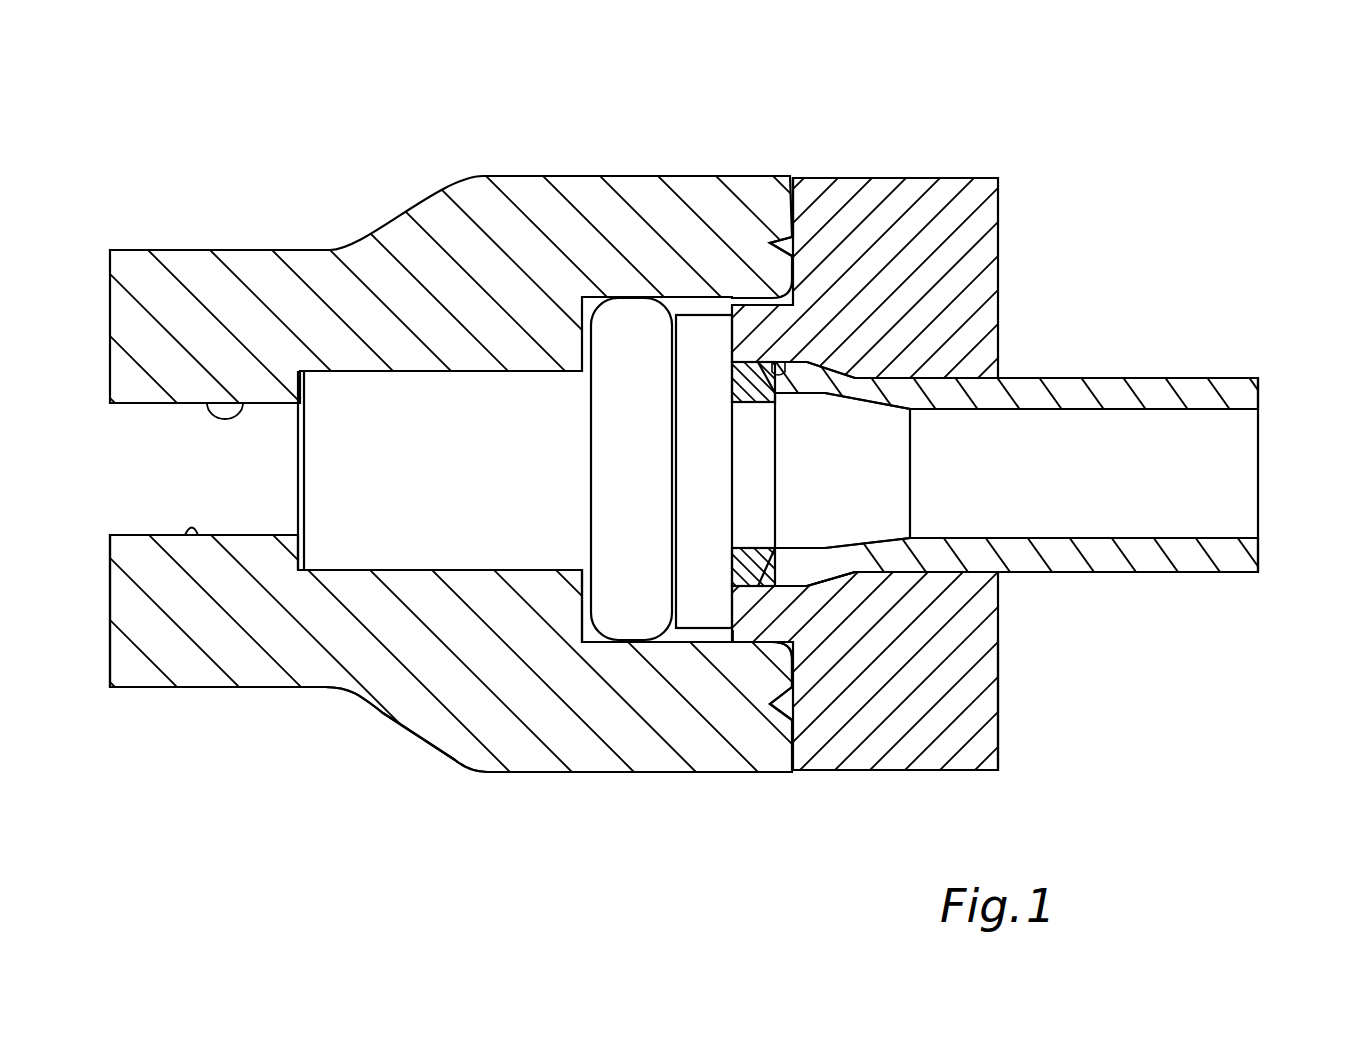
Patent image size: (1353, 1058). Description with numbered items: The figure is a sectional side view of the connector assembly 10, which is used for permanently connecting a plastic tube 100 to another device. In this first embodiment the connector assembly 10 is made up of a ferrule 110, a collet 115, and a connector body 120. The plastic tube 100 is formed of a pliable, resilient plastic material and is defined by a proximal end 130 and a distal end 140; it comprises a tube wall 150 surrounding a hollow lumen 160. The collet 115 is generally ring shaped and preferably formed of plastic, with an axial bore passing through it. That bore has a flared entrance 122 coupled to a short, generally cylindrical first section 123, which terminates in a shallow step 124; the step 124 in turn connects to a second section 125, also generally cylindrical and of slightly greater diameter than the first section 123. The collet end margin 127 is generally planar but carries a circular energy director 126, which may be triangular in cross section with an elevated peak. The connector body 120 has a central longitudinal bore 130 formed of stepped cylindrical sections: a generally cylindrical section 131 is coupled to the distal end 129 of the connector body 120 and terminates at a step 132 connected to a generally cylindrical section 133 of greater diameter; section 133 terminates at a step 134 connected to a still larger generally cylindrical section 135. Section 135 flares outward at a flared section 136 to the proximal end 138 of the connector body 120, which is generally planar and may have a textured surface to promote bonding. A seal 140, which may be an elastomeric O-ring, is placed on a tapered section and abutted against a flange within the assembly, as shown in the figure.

The connector assembly 10 is at (487, 150).
The plastic tube 100 is at (1082, 575).
The ferrule 110 is at (293, 508).
The collet 115 is at (915, 770).
The connector body 120 is at (485, 773).
The flared entrance 122 is at (973, 590).
The first section 123 is at (983, 732).
The step 124 is at (813, 577).
The second section 125 is at (773, 360).
The energy director 126 is at (790, 228).
The collet end margin 127 is at (775, 757).
The distal end 129 is at (108, 543).
The central longitudinal bore 130 is at (185, 530).
The cylindrical section 131 is at (243, 403).
The step 132 is at (312, 556).
The cylindrical section 133 is at (395, 552).
The step 134 is at (597, 607).
The cylindrical section 135 is at (633, 630).
The flared section 136 is at (768, 692).
The proximal end 138 is at (798, 205).
The seal 140 is at (623, 322).
The tube wall 150 is at (1160, 575).
The hollow lumen 160 is at (1085, 430).